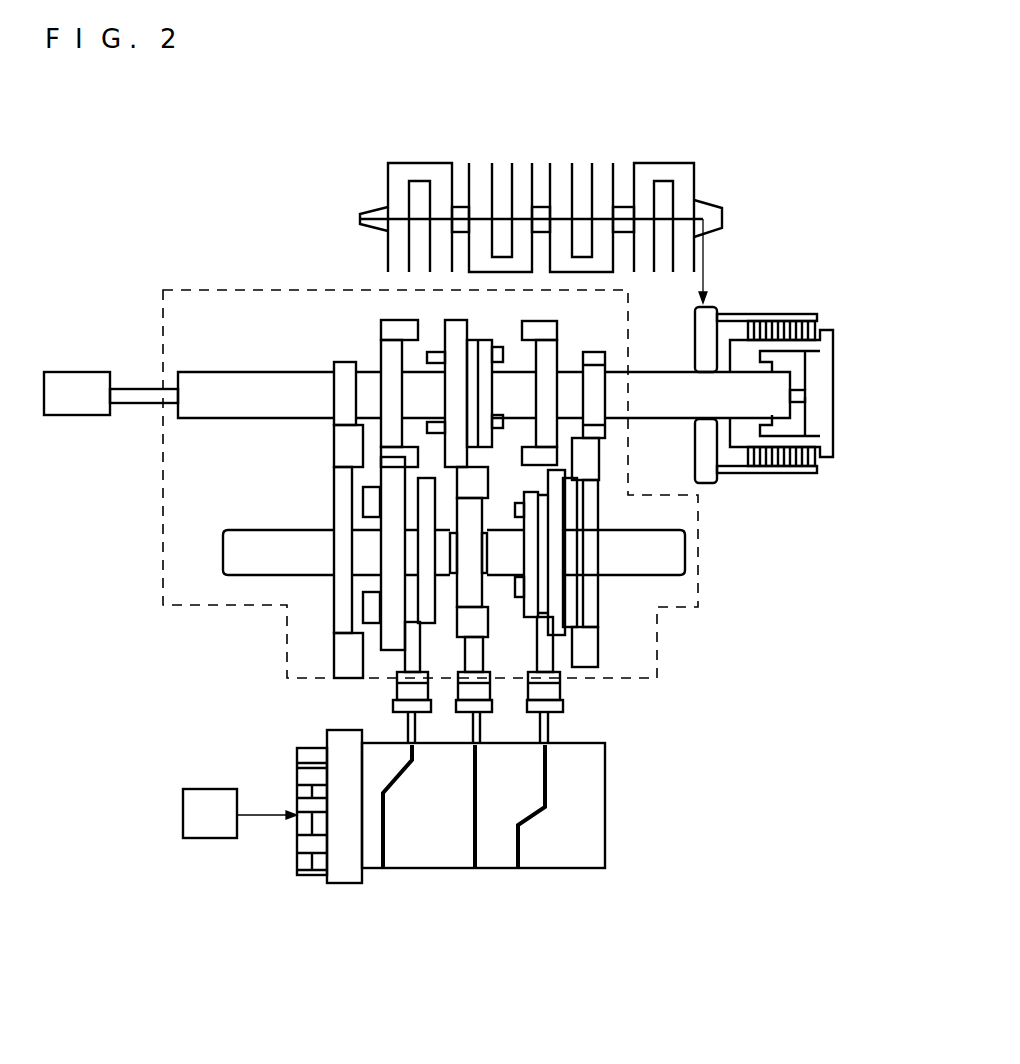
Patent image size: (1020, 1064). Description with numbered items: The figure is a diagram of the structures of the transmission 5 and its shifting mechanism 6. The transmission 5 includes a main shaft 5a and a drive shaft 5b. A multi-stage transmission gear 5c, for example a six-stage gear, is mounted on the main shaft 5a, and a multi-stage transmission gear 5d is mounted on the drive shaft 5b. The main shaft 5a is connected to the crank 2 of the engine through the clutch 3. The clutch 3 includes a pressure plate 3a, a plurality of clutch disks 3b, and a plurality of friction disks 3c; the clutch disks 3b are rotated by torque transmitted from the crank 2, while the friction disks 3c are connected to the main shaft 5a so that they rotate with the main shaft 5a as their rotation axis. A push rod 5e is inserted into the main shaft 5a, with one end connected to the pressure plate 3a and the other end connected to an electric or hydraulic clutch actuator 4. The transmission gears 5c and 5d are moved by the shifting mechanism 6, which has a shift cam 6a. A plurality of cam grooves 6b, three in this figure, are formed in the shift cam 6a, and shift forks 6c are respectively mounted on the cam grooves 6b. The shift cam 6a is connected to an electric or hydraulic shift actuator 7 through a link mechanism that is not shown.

The crank 2 is at (681, 171).
The clutch 3 is at (805, 366).
The pressure plate 3a is at (828, 408).
The clutch disks 3b is at (747, 320).
The friction disks 3c is at (808, 322).
The clutch actuator 4 is at (83, 383).
The transmission 5 is at (162, 581).
The main shaft 5a is at (248, 420).
The drive shaft 5b is at (278, 528).
The transmission gear 5c is at (349, 319).
The transmission gear 5d is at (614, 614).
The push rod 5e is at (135, 394).
The shifting mechanism 6 is at (467, 849).
The shift cam 6a is at (345, 876).
The cam grooves 6b is at (383, 870).
The shift forks 6c is at (415, 734).
The shift actuator 7 is at (210, 798).